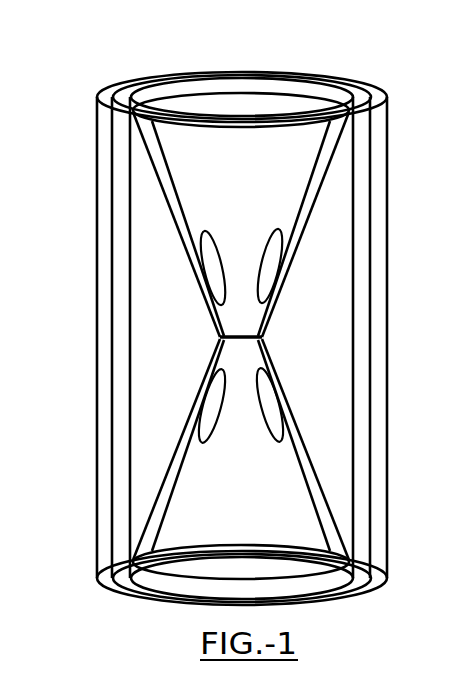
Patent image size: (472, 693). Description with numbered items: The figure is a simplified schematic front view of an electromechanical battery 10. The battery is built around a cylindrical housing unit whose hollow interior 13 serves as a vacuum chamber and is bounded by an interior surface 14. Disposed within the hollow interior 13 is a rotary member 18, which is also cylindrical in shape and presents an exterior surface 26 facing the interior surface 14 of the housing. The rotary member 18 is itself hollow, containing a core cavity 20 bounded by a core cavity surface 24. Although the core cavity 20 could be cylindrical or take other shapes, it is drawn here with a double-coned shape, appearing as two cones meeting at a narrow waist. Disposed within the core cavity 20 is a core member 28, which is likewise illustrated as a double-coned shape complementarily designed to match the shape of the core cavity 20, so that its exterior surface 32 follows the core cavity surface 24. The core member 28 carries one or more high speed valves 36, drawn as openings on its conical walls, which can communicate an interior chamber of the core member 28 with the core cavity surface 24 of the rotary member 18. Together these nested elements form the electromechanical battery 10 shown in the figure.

The electromechanical battery 10 is at (104, 64).
The hollow interior 13 is at (358, 298).
The interior surface 14 is at (375, 252).
The rotary member 18 is at (330, 418).
The core cavity 20 is at (332, 537).
The core cavity surface 24 is at (328, 495).
The exterior surface 26 is at (355, 348).
The core member 28 is at (471, 634).
The exterior surface 32 is at (182, 216).
The high speed valves 36 is at (196, 265).